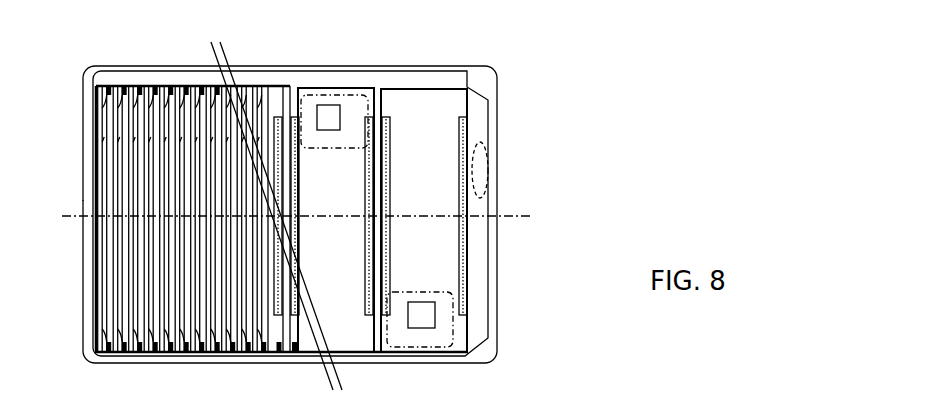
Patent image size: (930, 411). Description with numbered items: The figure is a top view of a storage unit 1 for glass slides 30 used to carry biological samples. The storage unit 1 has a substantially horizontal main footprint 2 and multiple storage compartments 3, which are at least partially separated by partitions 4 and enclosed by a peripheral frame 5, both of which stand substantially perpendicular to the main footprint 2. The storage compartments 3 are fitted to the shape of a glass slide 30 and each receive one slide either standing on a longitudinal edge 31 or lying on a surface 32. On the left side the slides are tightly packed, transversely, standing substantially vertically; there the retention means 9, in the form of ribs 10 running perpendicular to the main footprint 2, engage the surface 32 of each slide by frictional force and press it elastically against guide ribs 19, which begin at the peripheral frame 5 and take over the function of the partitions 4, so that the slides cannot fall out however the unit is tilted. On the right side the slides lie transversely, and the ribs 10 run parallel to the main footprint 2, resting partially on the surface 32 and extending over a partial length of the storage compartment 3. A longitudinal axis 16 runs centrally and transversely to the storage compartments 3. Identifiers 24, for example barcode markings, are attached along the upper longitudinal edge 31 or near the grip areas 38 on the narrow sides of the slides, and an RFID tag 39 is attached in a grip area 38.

The storage unit 1 is at (574, 82).
The main footprint 2 is at (497, 347).
The storage compartment 3 is at (235, 240).
The partition 4 is at (173, 353).
The peripheral frame 5 is at (477, 302).
The retention means 9 is at (462, 245).
The rib 10 is at (102, 105).
The longitudinal axis 16 is at (513, 217).
The guide rib 19 is at (262, 352).
The identifier 24 is at (487, 175).
The glass slide 30 is at (452, 103).
The longitudinal edge 31 is at (467, 105).
The surface 32 is at (337, 273).
The grip area 38 is at (348, 88).
The RFID tag 39 is at (337, 127).